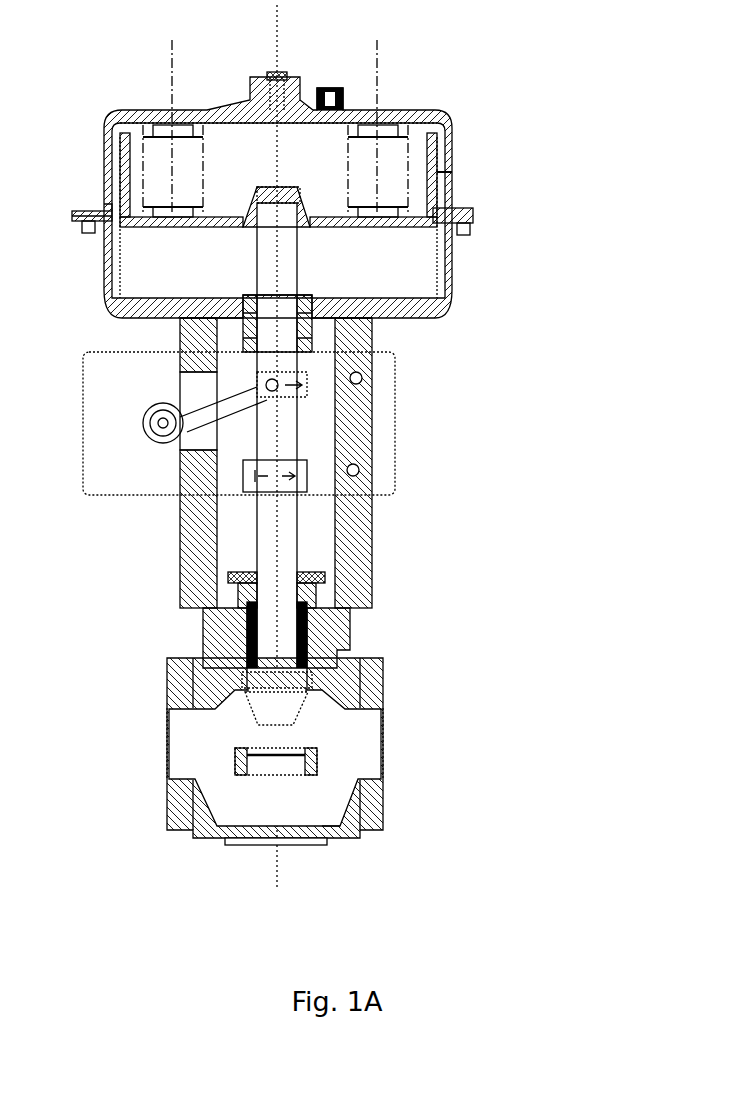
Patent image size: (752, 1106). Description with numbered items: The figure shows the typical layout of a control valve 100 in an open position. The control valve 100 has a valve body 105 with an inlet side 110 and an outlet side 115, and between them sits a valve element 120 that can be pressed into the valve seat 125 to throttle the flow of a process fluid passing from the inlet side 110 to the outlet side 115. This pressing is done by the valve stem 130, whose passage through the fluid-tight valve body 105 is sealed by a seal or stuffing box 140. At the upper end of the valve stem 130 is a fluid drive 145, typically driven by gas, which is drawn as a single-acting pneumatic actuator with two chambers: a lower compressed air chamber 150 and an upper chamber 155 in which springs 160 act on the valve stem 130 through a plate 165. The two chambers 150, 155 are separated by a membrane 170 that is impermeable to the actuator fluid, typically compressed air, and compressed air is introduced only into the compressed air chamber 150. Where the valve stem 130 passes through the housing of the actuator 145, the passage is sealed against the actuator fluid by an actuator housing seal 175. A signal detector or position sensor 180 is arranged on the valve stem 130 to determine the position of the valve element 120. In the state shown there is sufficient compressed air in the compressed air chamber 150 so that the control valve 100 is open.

The control valve 100 is at (527, 72).
The valve body 105 is at (330, 639).
The inlet side 110 is at (195, 753).
The outlet side 115 is at (365, 762).
The valve element 120 is at (287, 713).
The valve seat 125 is at (320, 778).
The valve stem 130 is at (285, 543).
The stuffing box 140 is at (215, 625).
The fluid drive 145 is at (471, 274).
The compressed air chamber 150 is at (278, 215).
The upper chamber 155 is at (278, 119).
The springs 160 is at (160, 158).
The plate 165 is at (199, 227).
The membrane 170 is at (437, 172).
The actuator housing seal 175 is at (305, 328).
The position sensor 180 is at (207, 403).